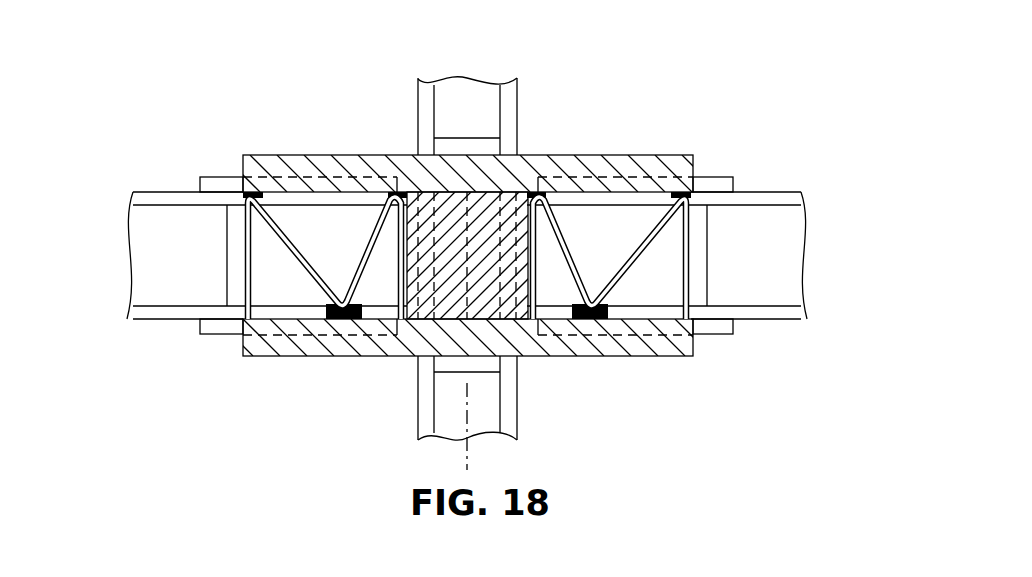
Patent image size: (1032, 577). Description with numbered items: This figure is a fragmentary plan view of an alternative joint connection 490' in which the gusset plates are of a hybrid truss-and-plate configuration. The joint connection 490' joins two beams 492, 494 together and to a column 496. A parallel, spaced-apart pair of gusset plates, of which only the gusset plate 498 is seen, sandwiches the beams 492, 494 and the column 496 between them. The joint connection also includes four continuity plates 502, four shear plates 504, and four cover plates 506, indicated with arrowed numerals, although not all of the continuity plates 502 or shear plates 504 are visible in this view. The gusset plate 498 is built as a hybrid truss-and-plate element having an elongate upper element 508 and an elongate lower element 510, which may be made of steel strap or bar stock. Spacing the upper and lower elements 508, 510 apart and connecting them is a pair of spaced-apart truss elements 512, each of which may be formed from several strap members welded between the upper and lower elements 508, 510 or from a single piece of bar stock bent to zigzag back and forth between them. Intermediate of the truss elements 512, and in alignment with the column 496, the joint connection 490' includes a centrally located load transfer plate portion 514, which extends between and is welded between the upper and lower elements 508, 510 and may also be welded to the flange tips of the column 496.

The joint connection 490' is at (309, 256).
The beam 492 is at (133, 215).
The beam 494 is at (750, 217).
The column 496 is at (480, 107).
The gusset plate 498 is at (716, 150).
The continuity plates 502 is at (452, 138).
The shear plates 504 is at (706, 260).
The cover plates 506 is at (222, 177).
The upper element 508 is at (568, 173).
The lower element 510 is at (287, 347).
The truss elements 512 is at (298, 263).
The load transfer plate portion 514 is at (507, 312).